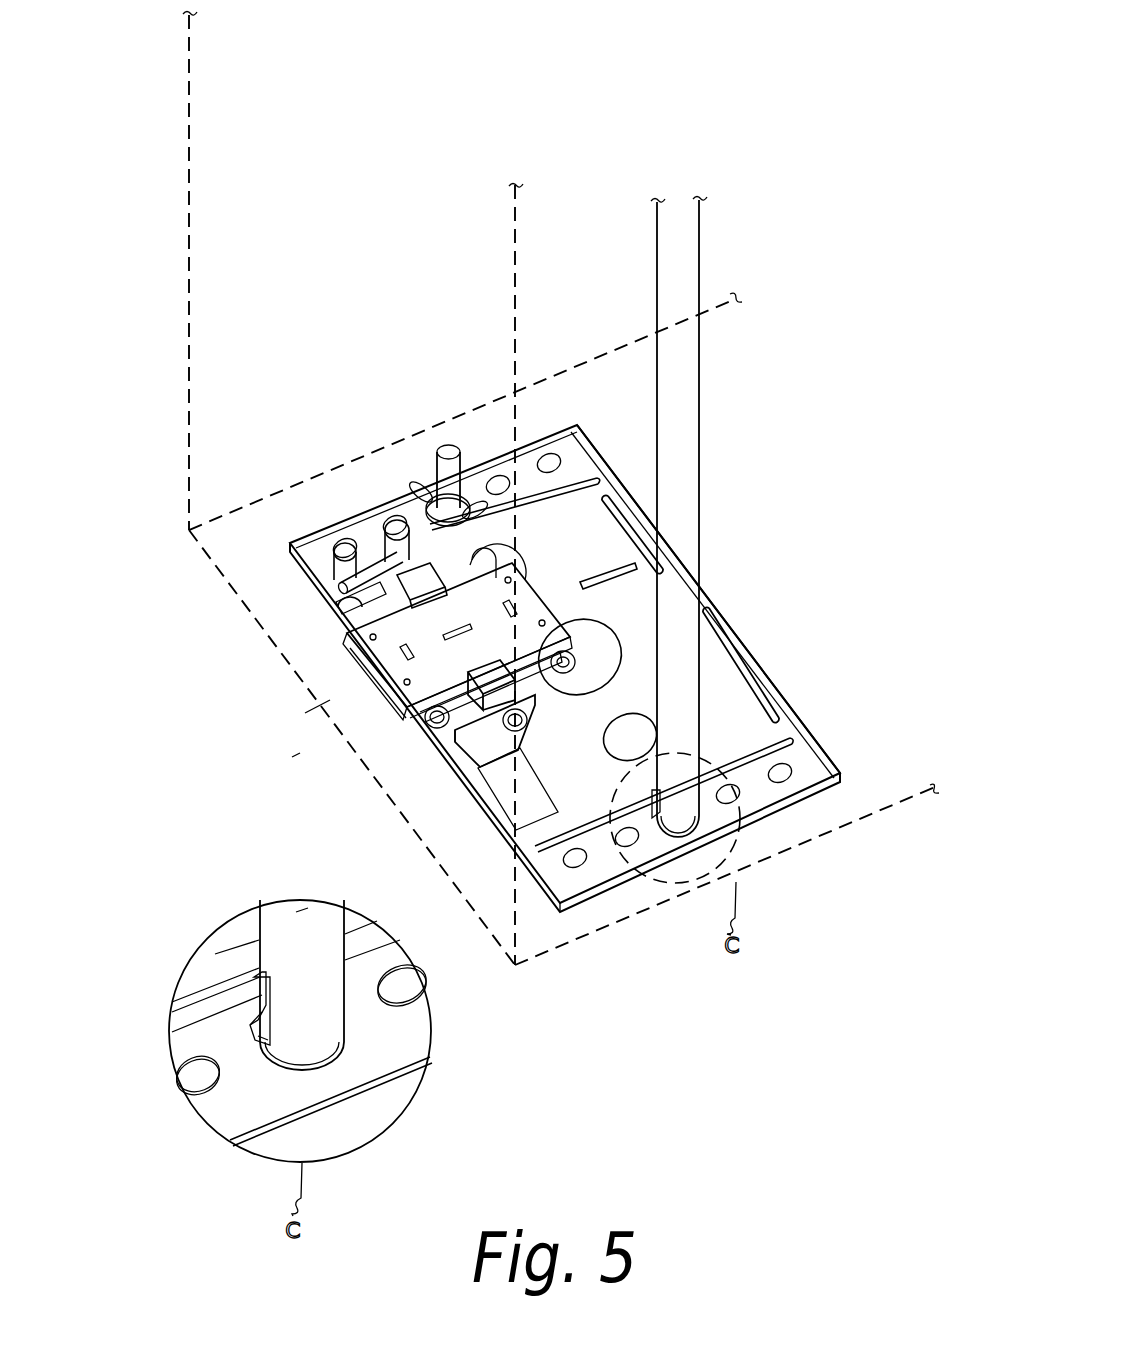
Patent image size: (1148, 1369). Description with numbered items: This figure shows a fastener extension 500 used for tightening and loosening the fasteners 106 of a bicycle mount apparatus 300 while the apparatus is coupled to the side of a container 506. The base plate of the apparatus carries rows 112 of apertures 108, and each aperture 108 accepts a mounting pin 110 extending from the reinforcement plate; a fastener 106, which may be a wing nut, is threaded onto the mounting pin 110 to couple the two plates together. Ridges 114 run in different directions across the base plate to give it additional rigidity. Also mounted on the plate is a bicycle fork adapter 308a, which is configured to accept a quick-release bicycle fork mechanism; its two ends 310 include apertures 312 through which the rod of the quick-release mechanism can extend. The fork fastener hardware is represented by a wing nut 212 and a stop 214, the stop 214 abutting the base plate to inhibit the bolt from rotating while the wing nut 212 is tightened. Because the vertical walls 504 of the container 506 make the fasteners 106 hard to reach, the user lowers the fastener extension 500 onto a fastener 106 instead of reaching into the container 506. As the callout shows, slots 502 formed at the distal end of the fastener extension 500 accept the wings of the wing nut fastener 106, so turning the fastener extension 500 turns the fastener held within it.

The fasteners 106 is at (412, 500).
The aperture 108 is at (792, 778).
The mounting pin 110 is at (455, 450).
The rows 112 is at (808, 770).
The ridges 114 is at (748, 690).
The wing nut 212 is at (340, 574).
The stop 214 is at (490, 732).
The bicycle mount apparatus 300 is at (305, 713).
The bicycle fork adapter 308a is at (356, 628).
The ends 310 is at (330, 605).
The apertures 312 is at (425, 722).
The fastener extension 500 is at (700, 447).
The slots 502 is at (264, 992).
The vertical walls 504 is at (189, 394).
The container 506 is at (292, 757).